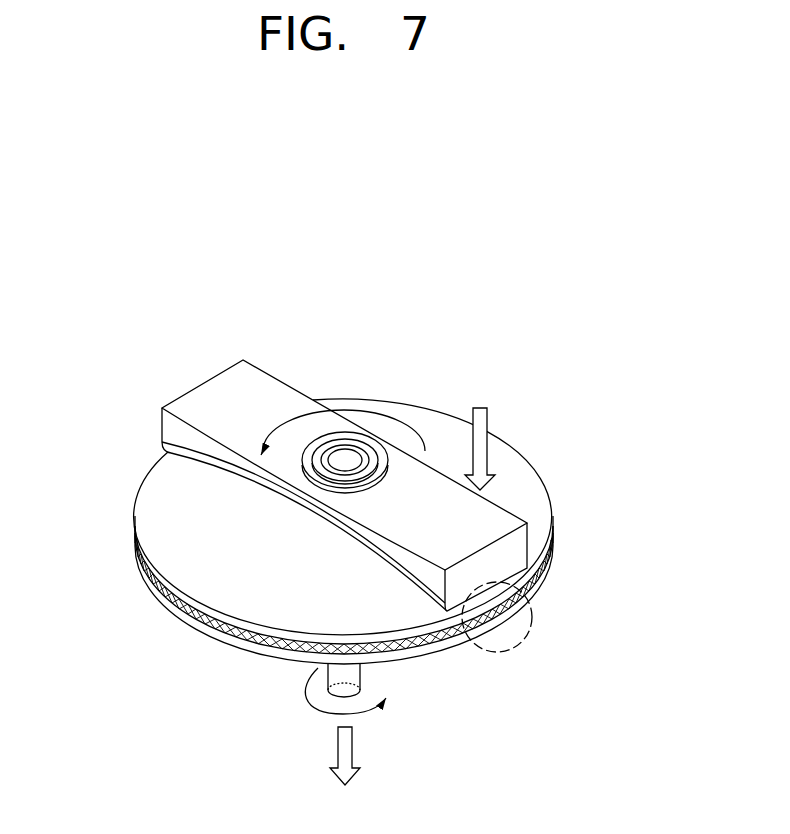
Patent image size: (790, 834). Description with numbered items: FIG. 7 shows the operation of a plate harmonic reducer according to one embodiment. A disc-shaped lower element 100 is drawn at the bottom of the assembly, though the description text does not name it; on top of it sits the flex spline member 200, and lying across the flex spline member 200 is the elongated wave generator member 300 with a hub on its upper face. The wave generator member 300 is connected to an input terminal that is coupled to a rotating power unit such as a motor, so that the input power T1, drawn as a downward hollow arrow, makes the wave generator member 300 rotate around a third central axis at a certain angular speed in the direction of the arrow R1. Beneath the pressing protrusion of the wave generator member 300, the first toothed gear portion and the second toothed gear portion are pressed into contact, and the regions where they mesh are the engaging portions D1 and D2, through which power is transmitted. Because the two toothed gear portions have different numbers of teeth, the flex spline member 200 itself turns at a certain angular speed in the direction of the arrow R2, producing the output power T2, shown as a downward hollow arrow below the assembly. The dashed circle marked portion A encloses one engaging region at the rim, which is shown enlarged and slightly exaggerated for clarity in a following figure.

The lower base / stage 100 is at (172, 613).
The flex spline member 200 is at (508, 442).
The wave generator member 300 is at (179, 391).
The arrow indicating rotation of wave generator member R1 is at (330, 432).
The arrow indicating rotation of flex spline member R2 is at (363, 691).
The input power T1 is at (480, 432).
The output power T2 is at (345, 771).
The engaging portion D1 is at (509, 618).
The engaging portion D2 is at (157, 461).
The portion A is at (532, 621).